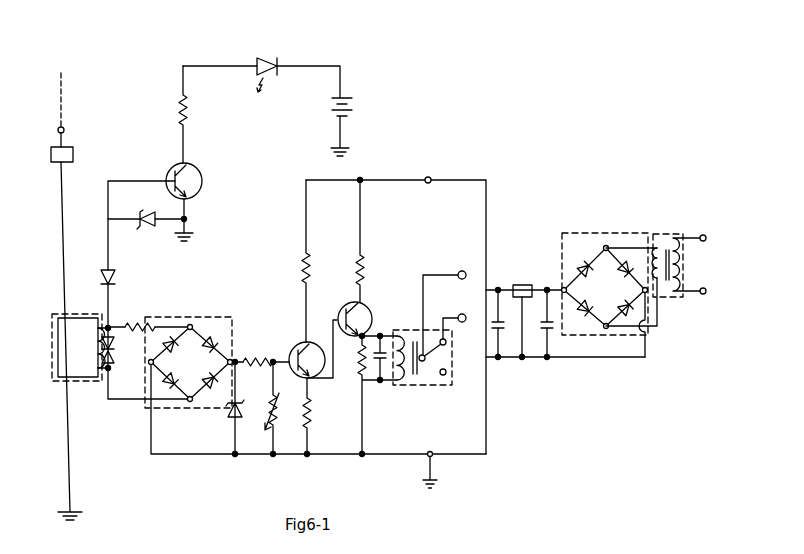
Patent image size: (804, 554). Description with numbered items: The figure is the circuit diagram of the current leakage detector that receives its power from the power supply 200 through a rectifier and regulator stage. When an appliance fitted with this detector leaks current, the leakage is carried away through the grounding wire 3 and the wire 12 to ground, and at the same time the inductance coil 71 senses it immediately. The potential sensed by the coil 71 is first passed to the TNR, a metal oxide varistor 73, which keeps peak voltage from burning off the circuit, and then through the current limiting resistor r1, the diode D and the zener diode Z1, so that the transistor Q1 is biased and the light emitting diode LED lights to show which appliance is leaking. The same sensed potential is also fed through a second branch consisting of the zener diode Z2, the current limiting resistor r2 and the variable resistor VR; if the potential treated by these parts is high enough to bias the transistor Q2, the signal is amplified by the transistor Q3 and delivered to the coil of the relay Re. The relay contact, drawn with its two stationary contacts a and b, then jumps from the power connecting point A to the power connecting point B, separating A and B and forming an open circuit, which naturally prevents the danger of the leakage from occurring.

The grounding wire 3 is at (62, 88).
The wire 12 is at (67, 451).
The light emitting diode LED is at (268, 54).
The transistor Q1 is at (198, 166).
The zener diode Z1 is at (143, 228).
The diode D is at (102, 268).
The TNR (metal oxide varistor) 73 is at (114, 340).
The current limiting resistor r1 is at (147, 324).
The inductance coil 71 is at (101, 363).
The current limiting resistor r2 is at (248, 356).
The zener diode Z2 is at (237, 421).
The variable resistor VR is at (284, 408).
The transistor Q2 is at (312, 344).
The transistor Q3 is at (363, 301).
The power connecting point A is at (449, 303).
The power connecting point B is at (459, 318).
The relay Re is at (405, 387).
The relay contact a is at (450, 344).
The relay contact b is at (450, 373).
The power supply 200 is at (706, 240).